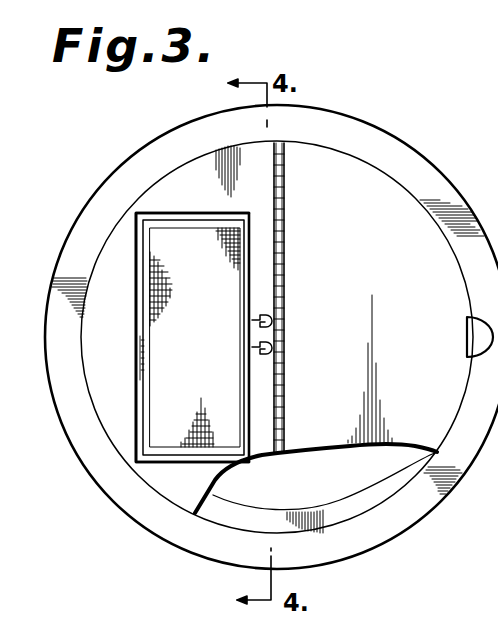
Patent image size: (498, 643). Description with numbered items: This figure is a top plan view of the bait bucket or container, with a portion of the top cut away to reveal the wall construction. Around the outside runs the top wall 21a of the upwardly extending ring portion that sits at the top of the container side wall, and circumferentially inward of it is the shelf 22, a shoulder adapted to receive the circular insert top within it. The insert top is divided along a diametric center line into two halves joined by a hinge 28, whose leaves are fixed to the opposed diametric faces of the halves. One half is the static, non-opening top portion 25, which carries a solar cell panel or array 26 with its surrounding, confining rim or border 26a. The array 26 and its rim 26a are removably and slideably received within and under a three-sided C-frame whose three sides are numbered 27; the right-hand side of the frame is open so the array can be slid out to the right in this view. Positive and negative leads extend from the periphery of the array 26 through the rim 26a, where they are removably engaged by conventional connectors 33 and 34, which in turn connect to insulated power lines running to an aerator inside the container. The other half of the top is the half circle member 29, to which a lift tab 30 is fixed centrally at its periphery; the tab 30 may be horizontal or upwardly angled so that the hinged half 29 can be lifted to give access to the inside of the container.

The top wall of portion 21a is at (369, 125).
The shelf 22 is at (360, 493).
The static top portion 25 is at (113, 417).
The solar cell panel or array 26 is at (227, 243).
The rim or border 26a is at (243, 294).
The three sided frame 27 is at (178, 212).
The hinge 28 is at (285, 218).
The half circle member 29 is at (308, 294).
The lift tab 30 is at (472, 335).
The connector 33 is at (250, 345).
The connector 34 is at (252, 323).